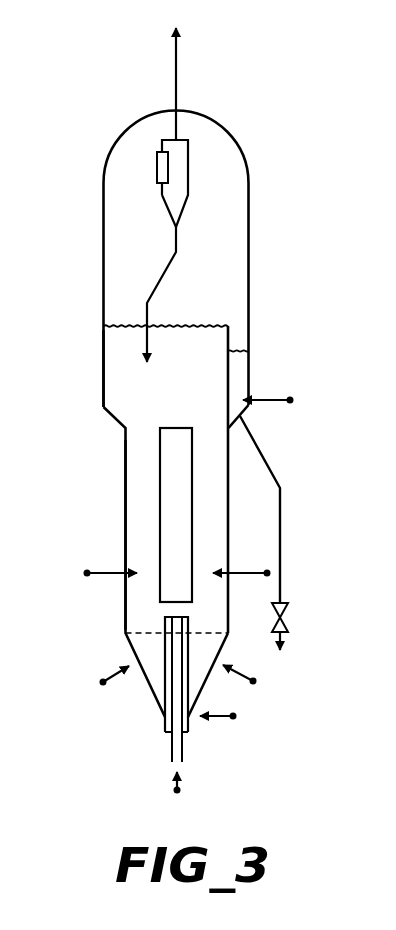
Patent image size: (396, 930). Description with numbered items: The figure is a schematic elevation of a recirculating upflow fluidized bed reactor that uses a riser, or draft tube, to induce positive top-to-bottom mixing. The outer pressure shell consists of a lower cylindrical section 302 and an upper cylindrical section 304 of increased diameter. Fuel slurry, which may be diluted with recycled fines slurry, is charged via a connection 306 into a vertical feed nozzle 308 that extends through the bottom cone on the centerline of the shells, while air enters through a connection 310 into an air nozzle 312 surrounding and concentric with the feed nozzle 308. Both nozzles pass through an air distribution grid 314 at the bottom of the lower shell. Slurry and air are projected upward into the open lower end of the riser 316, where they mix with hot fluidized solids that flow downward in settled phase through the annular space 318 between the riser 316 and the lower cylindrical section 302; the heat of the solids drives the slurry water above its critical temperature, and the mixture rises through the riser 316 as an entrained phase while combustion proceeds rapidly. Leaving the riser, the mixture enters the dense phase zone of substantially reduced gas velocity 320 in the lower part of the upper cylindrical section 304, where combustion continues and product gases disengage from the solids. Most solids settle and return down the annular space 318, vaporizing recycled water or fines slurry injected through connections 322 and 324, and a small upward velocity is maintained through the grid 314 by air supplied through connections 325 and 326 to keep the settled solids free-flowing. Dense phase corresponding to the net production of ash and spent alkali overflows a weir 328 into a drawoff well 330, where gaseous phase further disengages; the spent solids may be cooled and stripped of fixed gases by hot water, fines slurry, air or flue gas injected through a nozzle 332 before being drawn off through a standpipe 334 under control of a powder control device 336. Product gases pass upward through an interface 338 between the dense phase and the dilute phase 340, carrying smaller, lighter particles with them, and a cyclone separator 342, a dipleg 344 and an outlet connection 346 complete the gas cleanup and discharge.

The lower cylindrical section 302 is at (125, 457).
The upper cylindrical section 304 is at (103, 192).
The connection 306 is at (182, 775).
The vertical feed nozzle 308 is at (172, 748).
The connection 310 is at (215, 718).
The air nozzle 312 is at (165, 715).
The air distribution grid 314 is at (140, 643).
The riser 316 is at (160, 483).
The annular space 318 is at (143, 595).
The dense phase zone of substantially reduced gas velocity 320 is at (128, 385).
The connection 322 is at (108, 572).
The connection 324 is at (255, 572).
The connection 325 is at (112, 680).
The connection 326 is at (242, 683).
The weir 328 is at (230, 333).
The drawoff well 330 is at (240, 372).
The nozzle 332 is at (278, 405).
The standpipe 334 is at (273, 475).
The powder control device 336 is at (289, 617).
The interface 338 is at (122, 323).
The dilute phase 340 is at (207, 243).
The cyclone separator 342 is at (189, 173).
The dipleg 344 is at (163, 268).
The outlet connection 346 is at (177, 80).